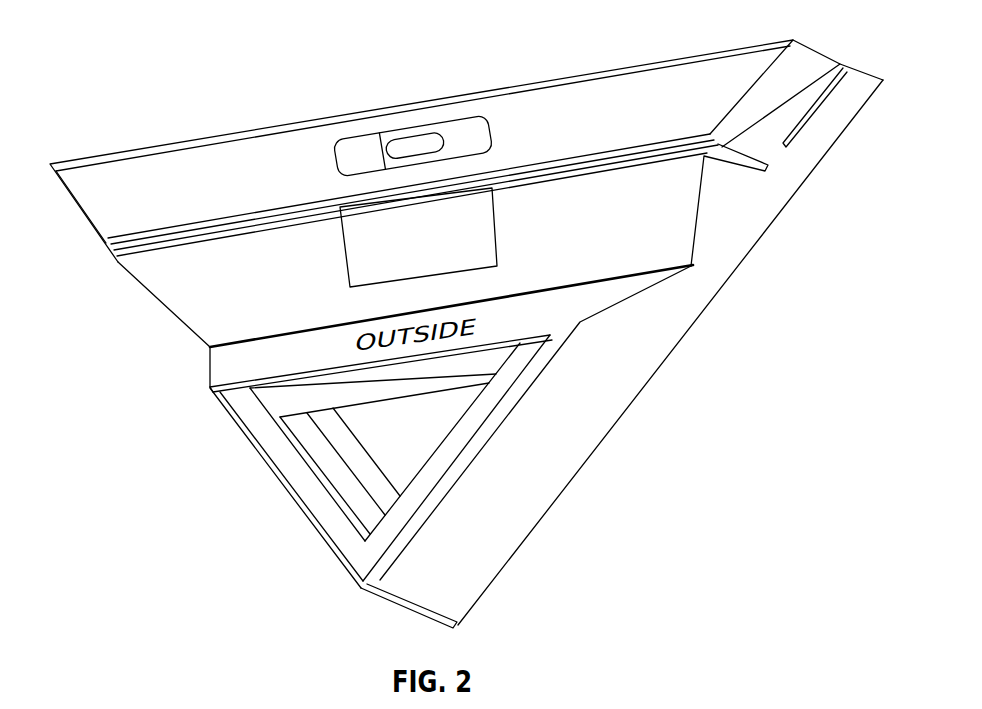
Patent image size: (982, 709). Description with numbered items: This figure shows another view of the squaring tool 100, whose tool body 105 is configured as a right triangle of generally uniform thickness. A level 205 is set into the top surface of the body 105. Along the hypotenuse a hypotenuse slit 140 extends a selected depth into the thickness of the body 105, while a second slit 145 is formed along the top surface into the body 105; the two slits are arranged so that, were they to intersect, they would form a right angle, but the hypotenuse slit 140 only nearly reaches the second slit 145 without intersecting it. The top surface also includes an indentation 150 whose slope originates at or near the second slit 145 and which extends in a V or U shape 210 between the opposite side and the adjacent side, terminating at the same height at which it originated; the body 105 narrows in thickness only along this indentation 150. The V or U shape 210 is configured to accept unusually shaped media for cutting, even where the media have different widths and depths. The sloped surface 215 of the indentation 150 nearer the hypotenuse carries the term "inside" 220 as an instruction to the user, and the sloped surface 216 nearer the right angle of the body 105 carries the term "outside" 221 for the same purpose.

The squaring tool 100 is at (148, 62).
The tool body 105 is at (100, 296).
The hypotenuse slit 140 is at (815, 140).
The second slit 145 is at (756, 180).
The indentation 150 is at (150, 316).
The level 205 is at (323, 152).
The V or U shape of the indentation 210 is at (201, 355).
The sloped surface nearer the hypotenuse 215 is at (682, 221).
The sloped surface nearer the right angle 216 is at (582, 311).
The term "inside" 220 is at (341, 254).
The term "outside" 221 is at (493, 316).